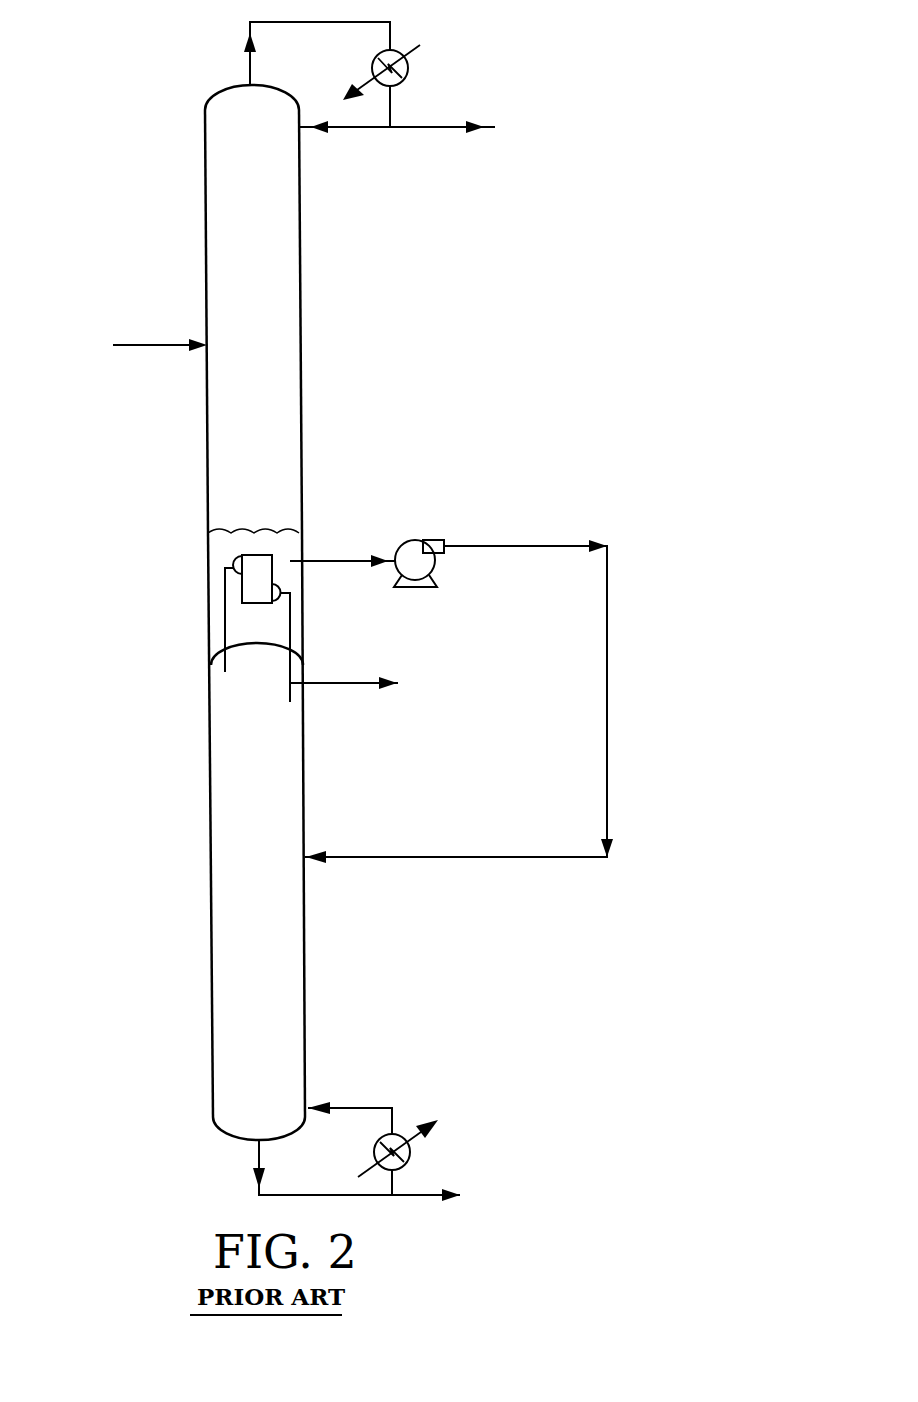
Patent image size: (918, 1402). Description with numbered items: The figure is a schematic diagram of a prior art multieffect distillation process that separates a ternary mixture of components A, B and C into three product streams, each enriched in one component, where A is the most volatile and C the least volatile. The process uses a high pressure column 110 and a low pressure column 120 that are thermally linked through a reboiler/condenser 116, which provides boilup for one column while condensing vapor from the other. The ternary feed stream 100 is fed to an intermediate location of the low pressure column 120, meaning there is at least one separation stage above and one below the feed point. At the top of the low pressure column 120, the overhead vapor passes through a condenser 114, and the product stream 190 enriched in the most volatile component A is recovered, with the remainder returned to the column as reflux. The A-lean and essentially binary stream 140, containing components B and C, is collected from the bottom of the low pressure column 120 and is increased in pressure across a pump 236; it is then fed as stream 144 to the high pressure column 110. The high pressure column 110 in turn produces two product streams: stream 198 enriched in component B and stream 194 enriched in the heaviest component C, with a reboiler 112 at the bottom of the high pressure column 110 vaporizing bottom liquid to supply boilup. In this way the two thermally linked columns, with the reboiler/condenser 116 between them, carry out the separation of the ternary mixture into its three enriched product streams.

The feed stream 100 is at (144, 346).
The high pressure column 110 is at (305, 1013).
The reboiler 112 is at (401, 1133).
The condenser 114 is at (396, 50).
The reboiler/condenser 116 is at (257, 565).
The low pressure column 120 is at (302, 424).
The A-lean binary stream 140 is at (336, 561).
The pressurized binary stream 144 is at (390, 858).
The A-enriched product stream 190 is at (410, 130).
The C-enriched product stream 194 is at (410, 1196).
The B-enriched product stream 198 is at (335, 683).
The pump 236 is at (416, 549).